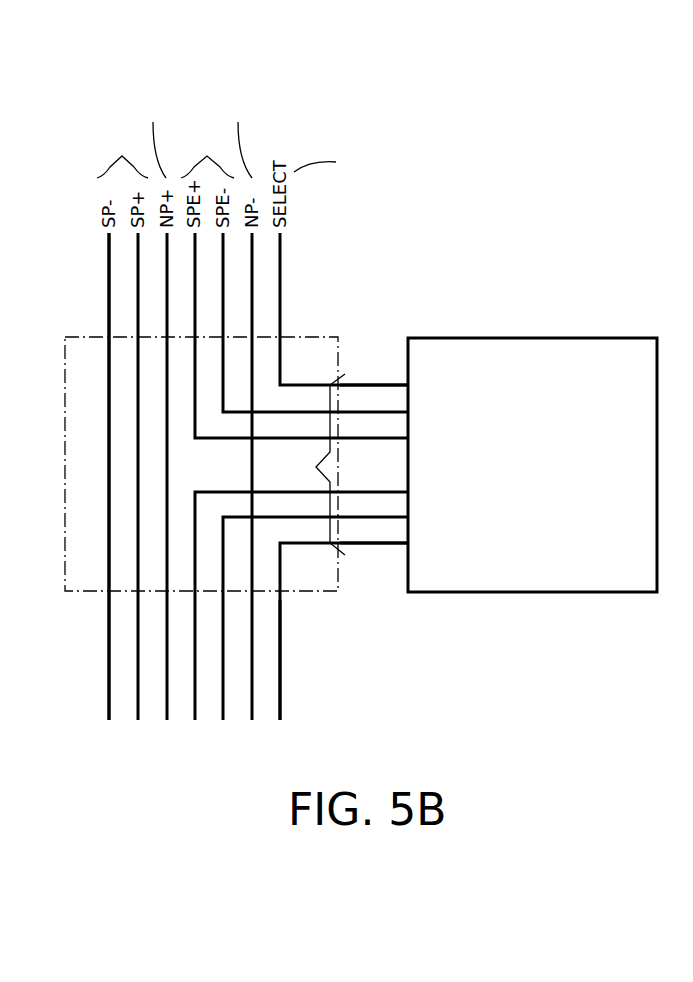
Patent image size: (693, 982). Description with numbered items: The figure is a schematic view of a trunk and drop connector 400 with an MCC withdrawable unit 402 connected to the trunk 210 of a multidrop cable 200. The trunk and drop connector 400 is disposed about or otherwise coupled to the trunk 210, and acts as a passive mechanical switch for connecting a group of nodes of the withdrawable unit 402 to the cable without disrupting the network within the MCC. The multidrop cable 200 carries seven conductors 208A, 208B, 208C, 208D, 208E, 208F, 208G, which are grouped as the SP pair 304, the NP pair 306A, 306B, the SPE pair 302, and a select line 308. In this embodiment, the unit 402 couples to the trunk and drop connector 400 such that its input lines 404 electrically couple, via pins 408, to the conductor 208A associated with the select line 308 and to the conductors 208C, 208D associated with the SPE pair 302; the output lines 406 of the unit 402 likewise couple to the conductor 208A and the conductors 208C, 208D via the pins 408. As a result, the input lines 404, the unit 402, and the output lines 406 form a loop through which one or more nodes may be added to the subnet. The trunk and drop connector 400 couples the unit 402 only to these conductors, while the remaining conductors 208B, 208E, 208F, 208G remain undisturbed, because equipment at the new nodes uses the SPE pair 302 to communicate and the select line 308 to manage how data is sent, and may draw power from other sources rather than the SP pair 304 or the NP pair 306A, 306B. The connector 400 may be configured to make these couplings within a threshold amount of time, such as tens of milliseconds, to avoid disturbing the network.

The multidrop cable 200 is at (109, 284).
The conductor 208A is at (280, 708).
The conductor 208B is at (252, 668).
The conductor 208C is at (223, 700).
The conductor 208D is at (195, 700).
The conductor 208E is at (167, 700).
The conductor 208F is at (138, 700).
The conductor 208G is at (109, 700).
The trunk 210 is at (280, 640).
The SPE pair 302 is at (207, 153).
The SP pair 304 is at (122, 153).
The NP pair 306A is at (239, 138).
The NP pair 306B is at (154, 138).
The select line 308 is at (335, 163).
The trunk and drop connector 400 is at (318, 337).
The MCC withdrawable unit 402 is at (532, 338).
The input lines 404 is at (376, 552).
The output lines 406 is at (386, 378).
The pins 408 is at (310, 464).